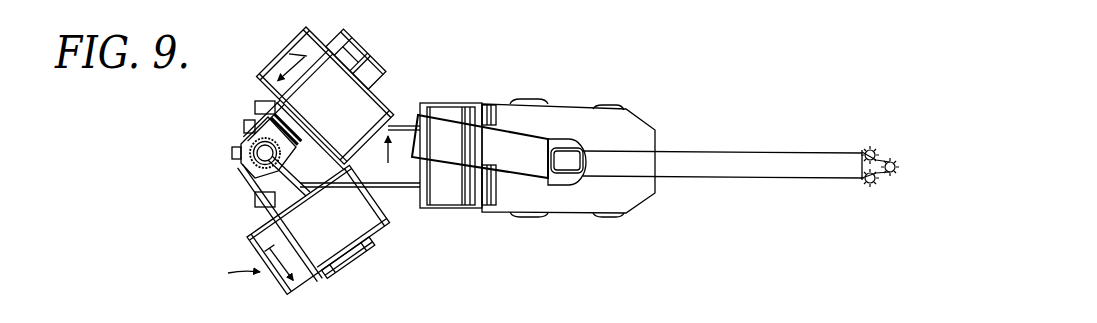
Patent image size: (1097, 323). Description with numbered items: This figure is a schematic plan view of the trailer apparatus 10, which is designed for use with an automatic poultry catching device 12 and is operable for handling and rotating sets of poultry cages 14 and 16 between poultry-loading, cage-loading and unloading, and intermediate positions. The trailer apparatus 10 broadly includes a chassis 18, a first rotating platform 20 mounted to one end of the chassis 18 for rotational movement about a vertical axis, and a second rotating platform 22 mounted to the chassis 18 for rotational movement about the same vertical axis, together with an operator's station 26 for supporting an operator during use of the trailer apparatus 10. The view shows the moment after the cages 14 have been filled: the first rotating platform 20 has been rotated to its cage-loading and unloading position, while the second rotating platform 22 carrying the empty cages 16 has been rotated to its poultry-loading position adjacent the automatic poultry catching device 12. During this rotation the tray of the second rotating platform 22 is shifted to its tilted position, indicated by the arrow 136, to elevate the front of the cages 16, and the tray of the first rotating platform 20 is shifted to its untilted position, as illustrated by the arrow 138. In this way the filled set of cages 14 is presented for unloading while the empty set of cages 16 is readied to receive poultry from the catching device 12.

The trailer apparatus 10 is at (185, 150).
The automatic poultry catching device 12 is at (579, 103).
The poultry cages 14 is at (260, 80).
The poultry cages 16 is at (372, 243).
The chassis 18 is at (244, 181).
The first rotating platform 20 is at (396, 64).
The second rotating platform 22 is at (352, 275).
The operator's station 26 is at (440, 197).
The arrow 136 is at (263, 257).
The arrow 138 is at (281, 77).